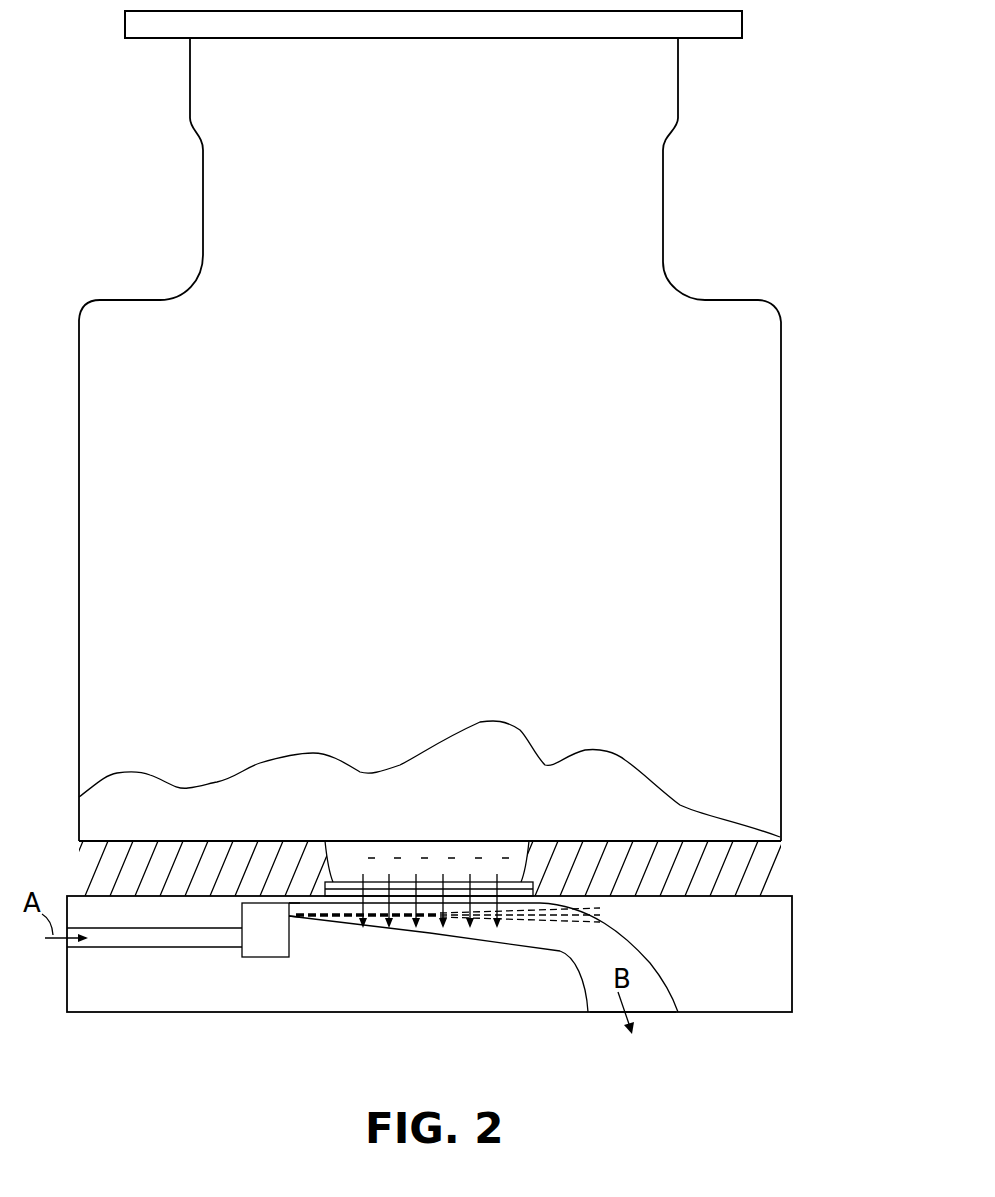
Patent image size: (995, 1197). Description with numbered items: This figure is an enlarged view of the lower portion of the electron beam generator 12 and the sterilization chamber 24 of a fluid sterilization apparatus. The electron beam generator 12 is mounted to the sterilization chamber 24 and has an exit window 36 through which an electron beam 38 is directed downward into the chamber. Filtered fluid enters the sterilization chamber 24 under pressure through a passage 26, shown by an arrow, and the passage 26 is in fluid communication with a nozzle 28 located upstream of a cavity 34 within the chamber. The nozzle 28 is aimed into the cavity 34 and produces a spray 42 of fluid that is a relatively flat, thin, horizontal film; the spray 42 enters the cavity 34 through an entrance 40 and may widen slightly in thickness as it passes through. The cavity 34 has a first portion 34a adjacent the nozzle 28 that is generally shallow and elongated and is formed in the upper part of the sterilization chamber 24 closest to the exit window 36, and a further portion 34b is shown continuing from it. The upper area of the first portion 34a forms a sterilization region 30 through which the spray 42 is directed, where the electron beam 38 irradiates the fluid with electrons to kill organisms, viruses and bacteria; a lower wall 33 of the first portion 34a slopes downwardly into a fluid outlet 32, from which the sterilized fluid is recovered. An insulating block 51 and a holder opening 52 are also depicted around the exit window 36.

The electron beam generator 12 is at (784, 384).
The sterilization chamber 24 is at (792, 928).
The passage 26 is at (120, 949).
The nozzle 28 is at (262, 952).
The sterilization region 30 is at (426, 940).
The fluid outlet 32 is at (653, 1012).
The lower wall 33 is at (442, 939).
The cavity 34 is at (647, 953).
The first portion 34a is at (338, 929).
The duct wall end portion 34b is at (587, 1001).
The exit window 36 is at (519, 880).
The electron beam 38 is at (493, 925).
The entrance 40 is at (308, 927).
The spray 42 is at (628, 937).
The insulating block 51 is at (781, 893).
The holder opening 52 is at (343, 893).